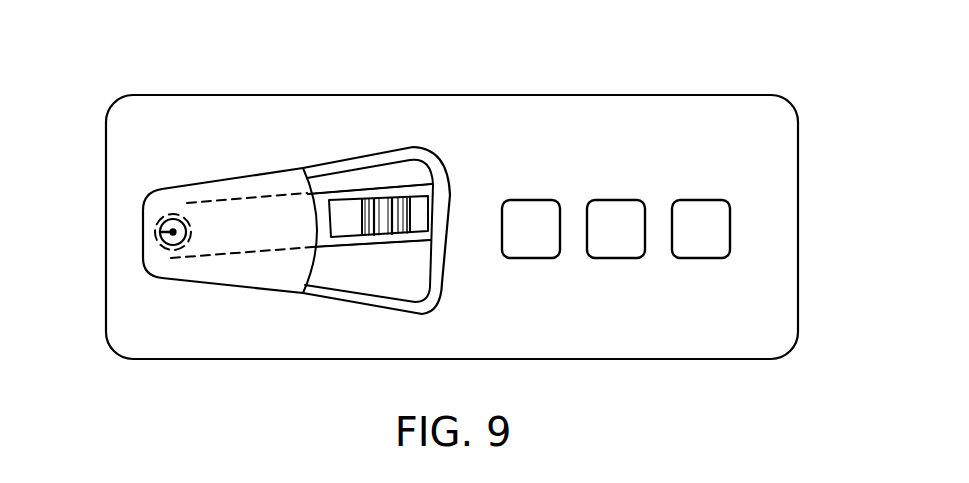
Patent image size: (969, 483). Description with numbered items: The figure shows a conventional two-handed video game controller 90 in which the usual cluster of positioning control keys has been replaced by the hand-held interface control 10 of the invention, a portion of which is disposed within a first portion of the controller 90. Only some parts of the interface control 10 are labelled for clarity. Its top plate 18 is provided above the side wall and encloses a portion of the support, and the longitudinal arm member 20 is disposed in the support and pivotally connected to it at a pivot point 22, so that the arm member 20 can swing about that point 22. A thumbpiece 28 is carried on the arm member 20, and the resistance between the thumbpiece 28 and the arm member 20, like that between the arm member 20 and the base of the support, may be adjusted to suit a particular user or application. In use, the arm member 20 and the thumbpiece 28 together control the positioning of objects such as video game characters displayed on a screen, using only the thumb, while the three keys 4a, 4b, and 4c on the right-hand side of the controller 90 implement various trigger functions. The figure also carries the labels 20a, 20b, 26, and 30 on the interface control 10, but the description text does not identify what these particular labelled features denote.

The two-handed video game controller 90 is at (469, 70).
The interface control 10 is at (415, 253).
The top plate 18 is at (248, 277).
The longitudinal arm member 20 is at (323, 227).
The sleeve lower edge 20a is at (397, 240).
The sleeve upper edge 20b is at (354, 193).
The pivot point 22 is at (159, 232).
The pivot ring 26 is at (183, 207).
The thumbpiece 28 is at (383, 206).
The window 30 is at (348, 228).
The key 4a is at (530, 258).
The key 4b is at (615, 258).
The key 4c is at (702, 258).